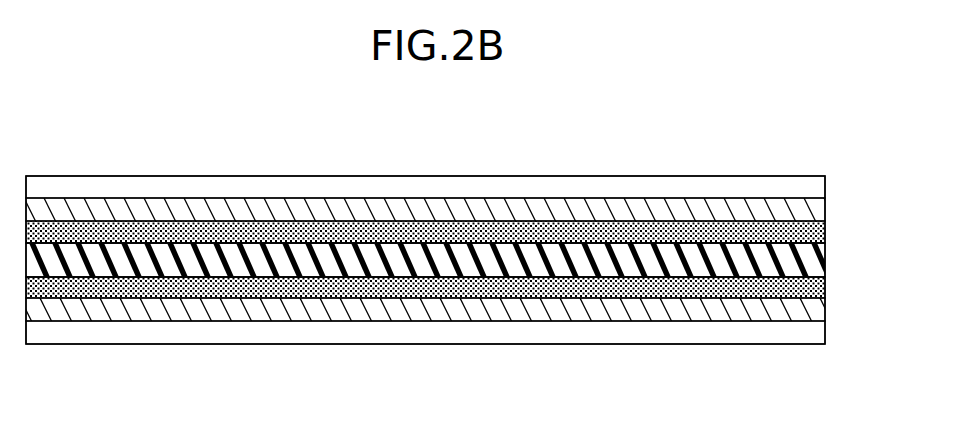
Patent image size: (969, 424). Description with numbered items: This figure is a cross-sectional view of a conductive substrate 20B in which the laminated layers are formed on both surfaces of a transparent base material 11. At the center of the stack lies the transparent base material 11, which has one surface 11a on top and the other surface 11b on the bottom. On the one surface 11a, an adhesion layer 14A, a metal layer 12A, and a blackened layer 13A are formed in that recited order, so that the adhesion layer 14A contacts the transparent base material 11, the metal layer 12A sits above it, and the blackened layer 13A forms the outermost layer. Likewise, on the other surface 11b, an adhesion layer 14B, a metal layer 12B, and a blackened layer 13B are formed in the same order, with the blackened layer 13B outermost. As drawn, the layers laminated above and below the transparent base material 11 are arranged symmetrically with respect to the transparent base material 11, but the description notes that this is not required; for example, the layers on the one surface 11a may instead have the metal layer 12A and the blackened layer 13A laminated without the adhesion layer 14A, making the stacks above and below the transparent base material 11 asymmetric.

The conductive substrate 20B is at (95, 152).
The transparent base material 11 is at (826, 262).
The one surface 11a is at (373, 236).
The other surface 11b is at (424, 284).
The metal layer 12A is at (826, 211).
The metal layer 12B is at (826, 313).
The blackened layer 13A is at (826, 188).
The blackened layer 13B is at (826, 337).
The adhesion layer 14A is at (826, 233).
The adhesion layer 14B is at (826, 290).